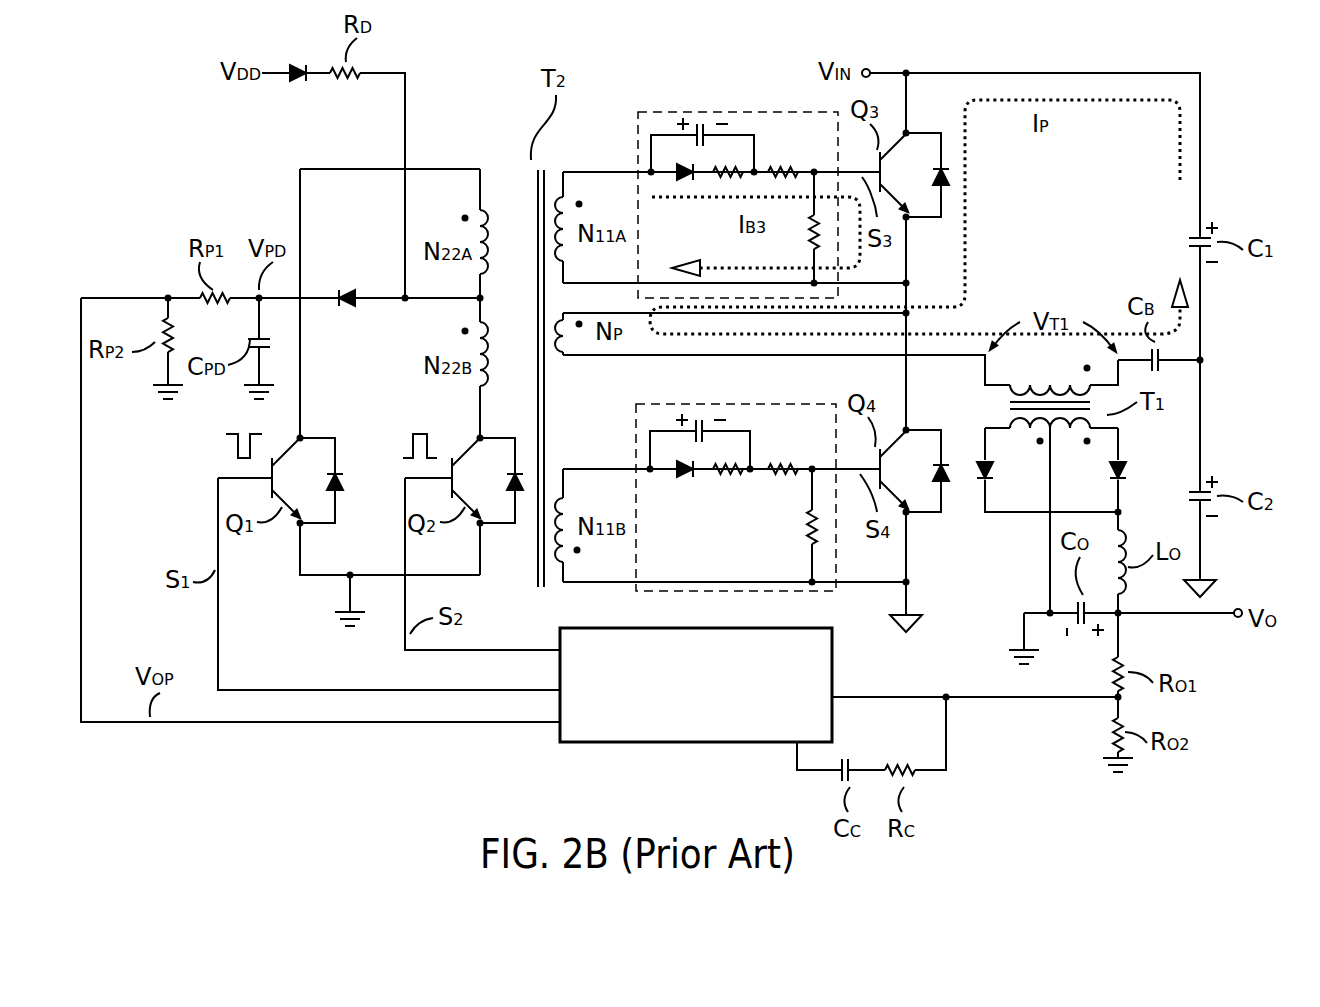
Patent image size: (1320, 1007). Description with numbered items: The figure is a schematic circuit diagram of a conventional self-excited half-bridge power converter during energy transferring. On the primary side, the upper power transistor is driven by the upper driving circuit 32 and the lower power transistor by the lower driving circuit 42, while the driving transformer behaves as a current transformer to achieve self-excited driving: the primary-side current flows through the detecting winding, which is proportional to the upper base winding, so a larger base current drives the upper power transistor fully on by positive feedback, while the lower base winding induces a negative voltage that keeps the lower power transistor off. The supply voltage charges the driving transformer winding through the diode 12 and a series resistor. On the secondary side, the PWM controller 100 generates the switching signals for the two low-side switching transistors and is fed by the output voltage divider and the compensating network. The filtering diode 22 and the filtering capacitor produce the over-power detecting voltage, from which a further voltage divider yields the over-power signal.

The diode 12 is at (297, 62).
The filtering diode 22 is at (346, 290).
The upper driving circuit 32 is at (714, 110).
The lower driving circuit 42 is at (712, 404).
The PWM controller 100 is at (590, 747).